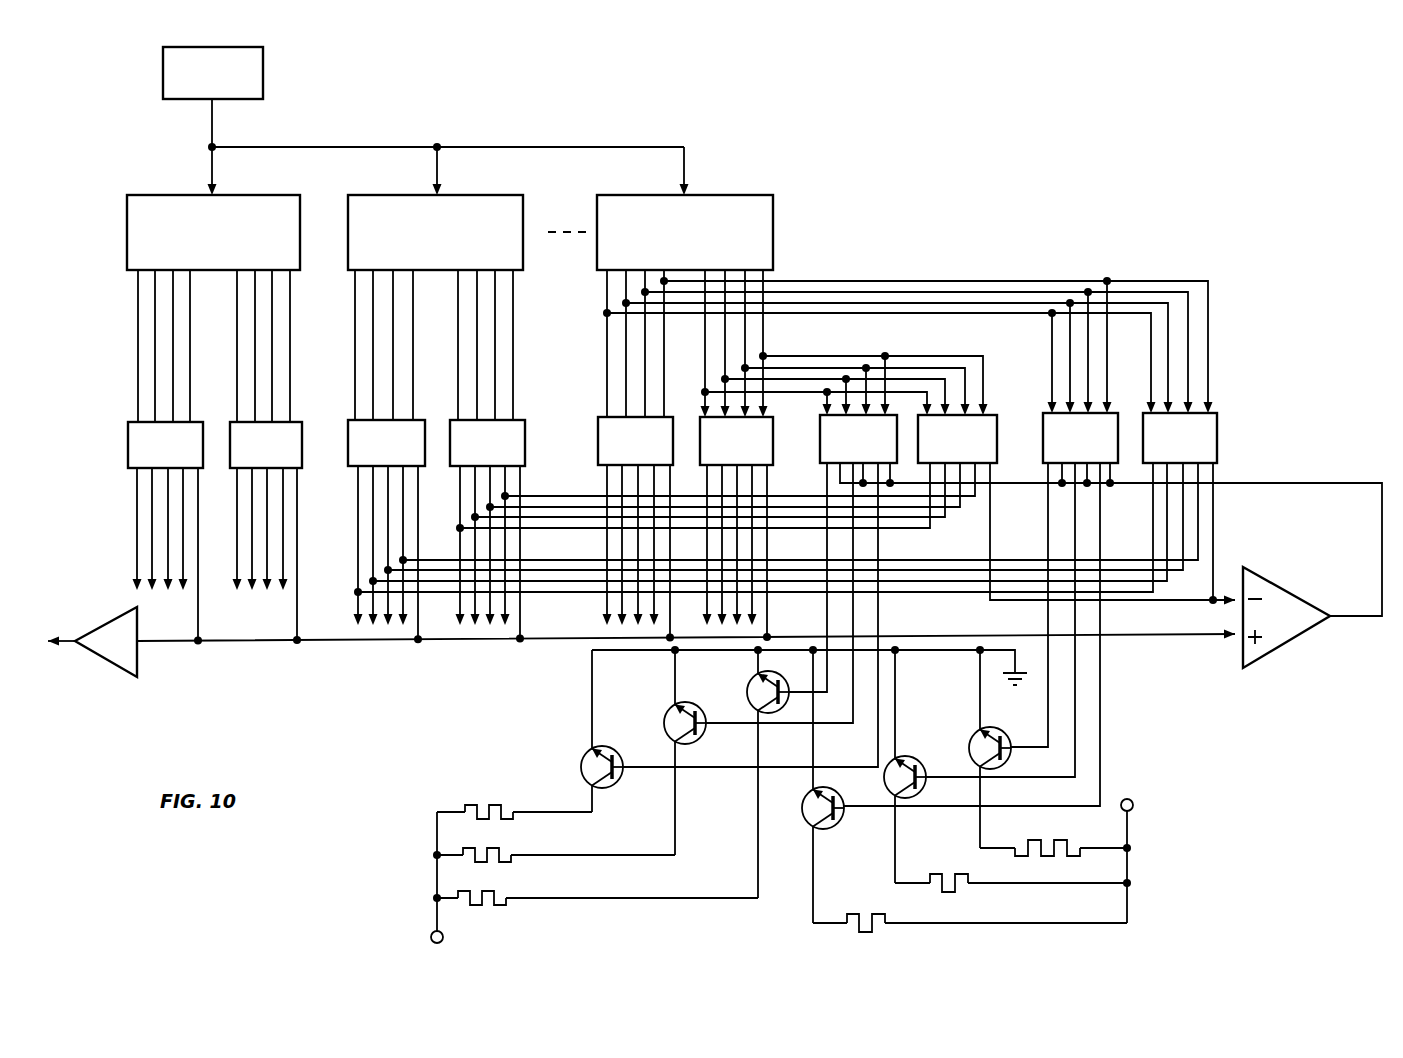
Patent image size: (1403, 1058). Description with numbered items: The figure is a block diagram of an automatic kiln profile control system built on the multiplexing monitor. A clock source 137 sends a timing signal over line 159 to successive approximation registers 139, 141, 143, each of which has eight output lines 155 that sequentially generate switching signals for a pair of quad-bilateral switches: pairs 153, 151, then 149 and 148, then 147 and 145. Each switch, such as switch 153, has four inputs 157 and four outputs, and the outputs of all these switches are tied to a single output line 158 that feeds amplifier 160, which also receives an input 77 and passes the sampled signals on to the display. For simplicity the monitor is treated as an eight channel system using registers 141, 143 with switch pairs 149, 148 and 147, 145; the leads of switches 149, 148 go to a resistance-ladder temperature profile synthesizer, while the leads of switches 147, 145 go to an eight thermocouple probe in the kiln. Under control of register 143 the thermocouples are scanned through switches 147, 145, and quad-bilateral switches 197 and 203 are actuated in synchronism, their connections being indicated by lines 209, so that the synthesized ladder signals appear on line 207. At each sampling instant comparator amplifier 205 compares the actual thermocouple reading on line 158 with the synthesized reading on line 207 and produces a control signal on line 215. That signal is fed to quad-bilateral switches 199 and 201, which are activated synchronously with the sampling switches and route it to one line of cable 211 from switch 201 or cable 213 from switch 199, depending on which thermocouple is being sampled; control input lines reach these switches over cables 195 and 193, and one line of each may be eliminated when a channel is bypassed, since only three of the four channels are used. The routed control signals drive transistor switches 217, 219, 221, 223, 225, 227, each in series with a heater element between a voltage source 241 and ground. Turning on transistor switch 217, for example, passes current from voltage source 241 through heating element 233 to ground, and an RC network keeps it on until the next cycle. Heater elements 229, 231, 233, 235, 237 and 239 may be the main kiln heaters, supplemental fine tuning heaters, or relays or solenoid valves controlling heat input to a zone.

The input signal line 77 is at (65, 637).
The clock source 137 is at (263, 97).
The successive approximation register 139 is at (175, 195).
The successive approximation register 141 is at (513, 195).
The successive approximation register 143 is at (740, 195).
The quad-bilateral switch 145 is at (705, 417).
The quad-bilateral switch 147 is at (598, 417).
The quad-bilateral switch 148 is at (457, 420).
The quad-bilateral switch 149 is at (350, 420).
The quad-bilateral switch 151 is at (240, 422).
The quad-bilateral switch 153 is at (125, 422).
The output lines 155 is at (223, 318).
The inputs 157 is at (95, 515).
The output line 158 is at (250, 645).
The line 159 is at (213, 122).
The amplifier 160 is at (112, 622).
The cable 193 is at (897, 248).
The cable 195 is at (818, 345).
The quad-bilateral switch 197 is at (1220, 425).
The quad-bilateral switch 199 is at (1044, 413).
The quad-bilateral switch 201 is at (818, 458).
The quad-bilateral switch 203 is at (997, 415).
The comparator amplifier 205 is at (1268, 585).
The line 207 is at (1006, 609).
The bus lines 209 is at (1215, 527).
The cable 211 is at (900, 613).
The cable 213 is at (1160, 712).
The line 215 is at (1302, 483).
The transistor switch 217 is at (748, 681).
The transistor switch 219 is at (666, 715).
The transistor switch 221 is at (583, 757).
The transistor switch 223 is at (978, 732).
The transistor switch 225 is at (905, 757).
The transistor switch 227 is at (837, 826).
The heater element 229 is at (473, 801).
The heater element 231 is at (512, 848).
The heater element 233 is at (508, 893).
The heater element 235 is at (1078, 845).
The heater element 237 is at (945, 855).
The heater element 239 is at (825, 928).
The voltage source 241 is at (432, 937).